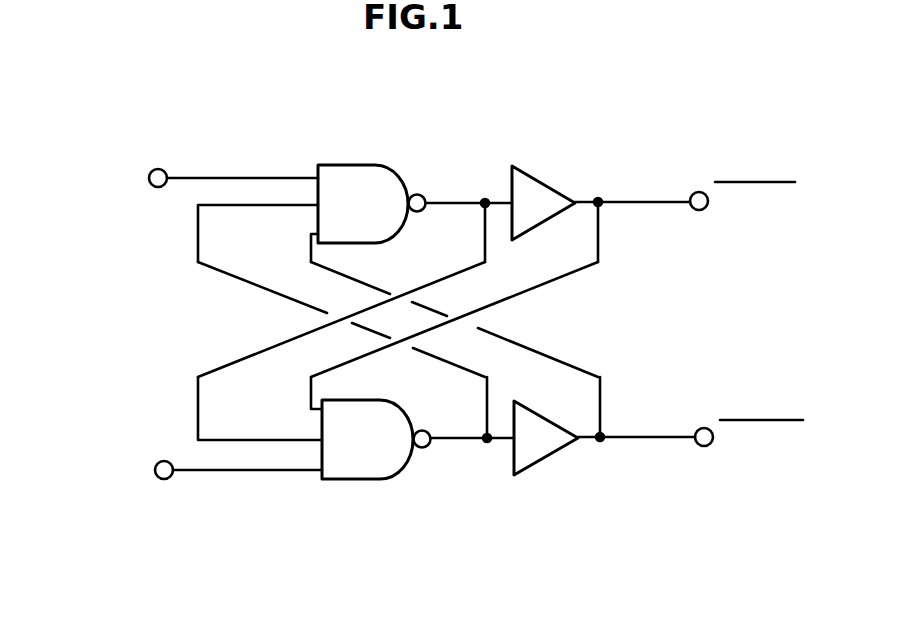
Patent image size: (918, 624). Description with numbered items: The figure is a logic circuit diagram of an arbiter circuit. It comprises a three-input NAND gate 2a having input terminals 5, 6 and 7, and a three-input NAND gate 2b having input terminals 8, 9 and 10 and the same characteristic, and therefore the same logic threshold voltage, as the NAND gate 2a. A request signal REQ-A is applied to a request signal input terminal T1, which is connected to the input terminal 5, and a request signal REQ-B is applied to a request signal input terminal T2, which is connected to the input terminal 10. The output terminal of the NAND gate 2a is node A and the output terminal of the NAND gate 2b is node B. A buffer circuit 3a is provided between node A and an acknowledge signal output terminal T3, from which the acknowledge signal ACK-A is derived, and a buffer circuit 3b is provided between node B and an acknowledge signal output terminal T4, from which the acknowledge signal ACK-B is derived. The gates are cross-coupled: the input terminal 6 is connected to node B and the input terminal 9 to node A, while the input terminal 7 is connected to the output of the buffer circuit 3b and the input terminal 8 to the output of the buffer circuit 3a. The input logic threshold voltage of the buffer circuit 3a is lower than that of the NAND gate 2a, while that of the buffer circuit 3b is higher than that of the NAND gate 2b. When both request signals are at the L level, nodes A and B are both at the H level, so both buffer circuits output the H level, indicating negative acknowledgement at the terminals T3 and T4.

The request signal input terminal T1 is at (158, 168).
The request signal input terminal T2 is at (163, 460).
The acknowledge signal output terminal T3 is at (699, 191).
The acknowledge signal output terminal T4 is at (704, 427).
The three-input NAND gate 2a is at (360, 172).
The three-input NAND gate 2b is at (398, 480).
The buffer circuit 3a is at (545, 166).
The buffer circuit 3b is at (560, 452).
The input terminal 5 is at (315, 165).
The input terminal 6 is at (316, 207).
The input terminal 7 is at (311, 236).
The input terminal 8 is at (318, 410).
The input terminal 9 is at (318, 445).
The input terminal 10 is at (323, 481).
The node A is at (485, 194).
The node B is at (490, 448).